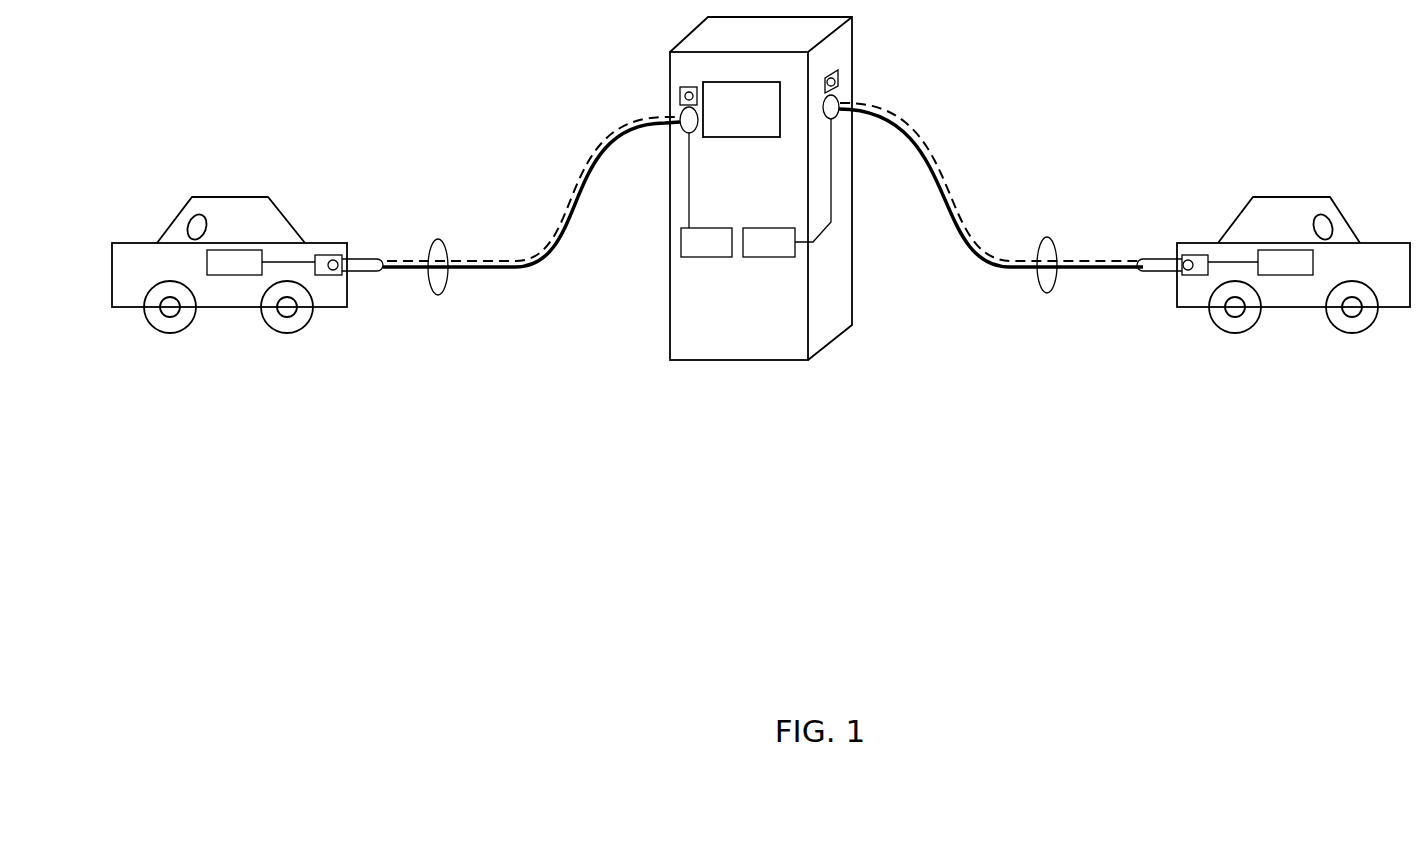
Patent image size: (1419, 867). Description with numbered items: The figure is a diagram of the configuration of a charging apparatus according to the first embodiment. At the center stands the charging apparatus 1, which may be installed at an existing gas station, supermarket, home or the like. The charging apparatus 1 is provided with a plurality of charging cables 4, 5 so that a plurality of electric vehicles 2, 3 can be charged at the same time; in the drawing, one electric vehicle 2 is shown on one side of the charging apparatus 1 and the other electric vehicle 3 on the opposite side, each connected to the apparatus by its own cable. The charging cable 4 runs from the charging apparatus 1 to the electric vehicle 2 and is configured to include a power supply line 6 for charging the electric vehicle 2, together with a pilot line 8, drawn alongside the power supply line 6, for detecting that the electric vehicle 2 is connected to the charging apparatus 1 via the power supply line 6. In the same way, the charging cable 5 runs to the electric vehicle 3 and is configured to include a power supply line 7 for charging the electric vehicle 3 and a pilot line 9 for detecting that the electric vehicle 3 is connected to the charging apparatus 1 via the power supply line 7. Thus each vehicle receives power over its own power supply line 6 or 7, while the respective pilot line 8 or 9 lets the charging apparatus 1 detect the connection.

The charging apparatus 1 is at (727, 333).
The electric vehicle 2 is at (1295, 287).
The electric vehicle 3 is at (240, 295).
The charging cable 4 is at (1047, 293).
The charging cable 5 is at (445, 297).
The power supply line 6 is at (960, 243).
The power supply line 7 is at (552, 257).
The pilot line 8 is at (945, 187).
The pilot line 9 is at (587, 168).